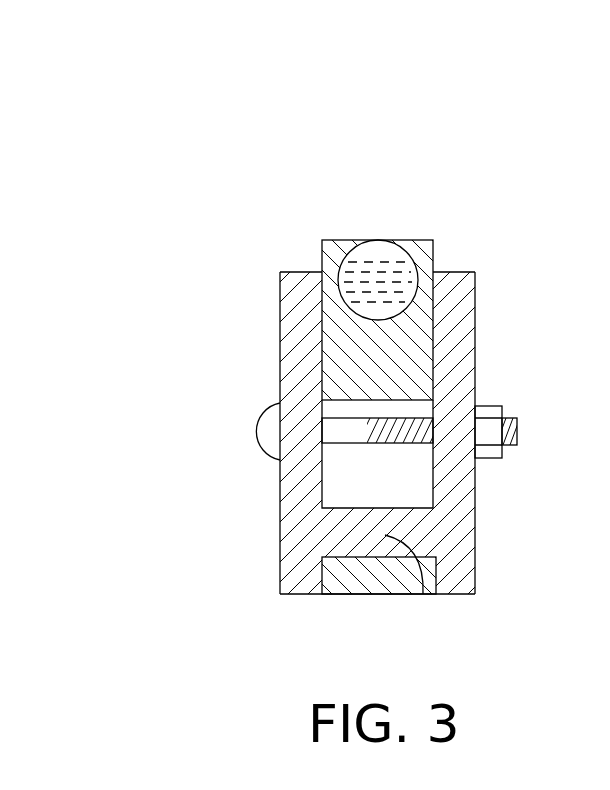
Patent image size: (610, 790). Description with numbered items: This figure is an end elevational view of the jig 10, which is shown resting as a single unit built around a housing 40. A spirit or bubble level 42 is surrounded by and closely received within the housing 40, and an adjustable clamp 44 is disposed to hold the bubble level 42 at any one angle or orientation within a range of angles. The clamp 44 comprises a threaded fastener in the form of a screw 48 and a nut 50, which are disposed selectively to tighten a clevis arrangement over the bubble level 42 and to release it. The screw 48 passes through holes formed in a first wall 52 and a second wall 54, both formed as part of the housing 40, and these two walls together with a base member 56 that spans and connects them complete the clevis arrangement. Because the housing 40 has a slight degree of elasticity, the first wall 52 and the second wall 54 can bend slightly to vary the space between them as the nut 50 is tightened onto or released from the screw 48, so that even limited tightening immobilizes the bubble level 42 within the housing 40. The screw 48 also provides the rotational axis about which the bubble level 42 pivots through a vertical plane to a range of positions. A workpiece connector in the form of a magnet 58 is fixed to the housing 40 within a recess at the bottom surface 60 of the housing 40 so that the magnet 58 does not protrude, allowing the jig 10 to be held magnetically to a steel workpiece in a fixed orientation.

The jig 10 is at (353, 108).
The housing 40 is at (500, 523).
The bubble level 42 is at (450, 240).
The adjustable clamp 44 is at (223, 462).
The screw 48 is at (348, 443).
The nut 50 is at (493, 405).
The first wall 52 is at (280, 302).
The second wall 54 is at (475, 310).
The base member 56 is at (423, 594).
The magnet 58 is at (365, 594).
The bottom surface 60 is at (302, 594).